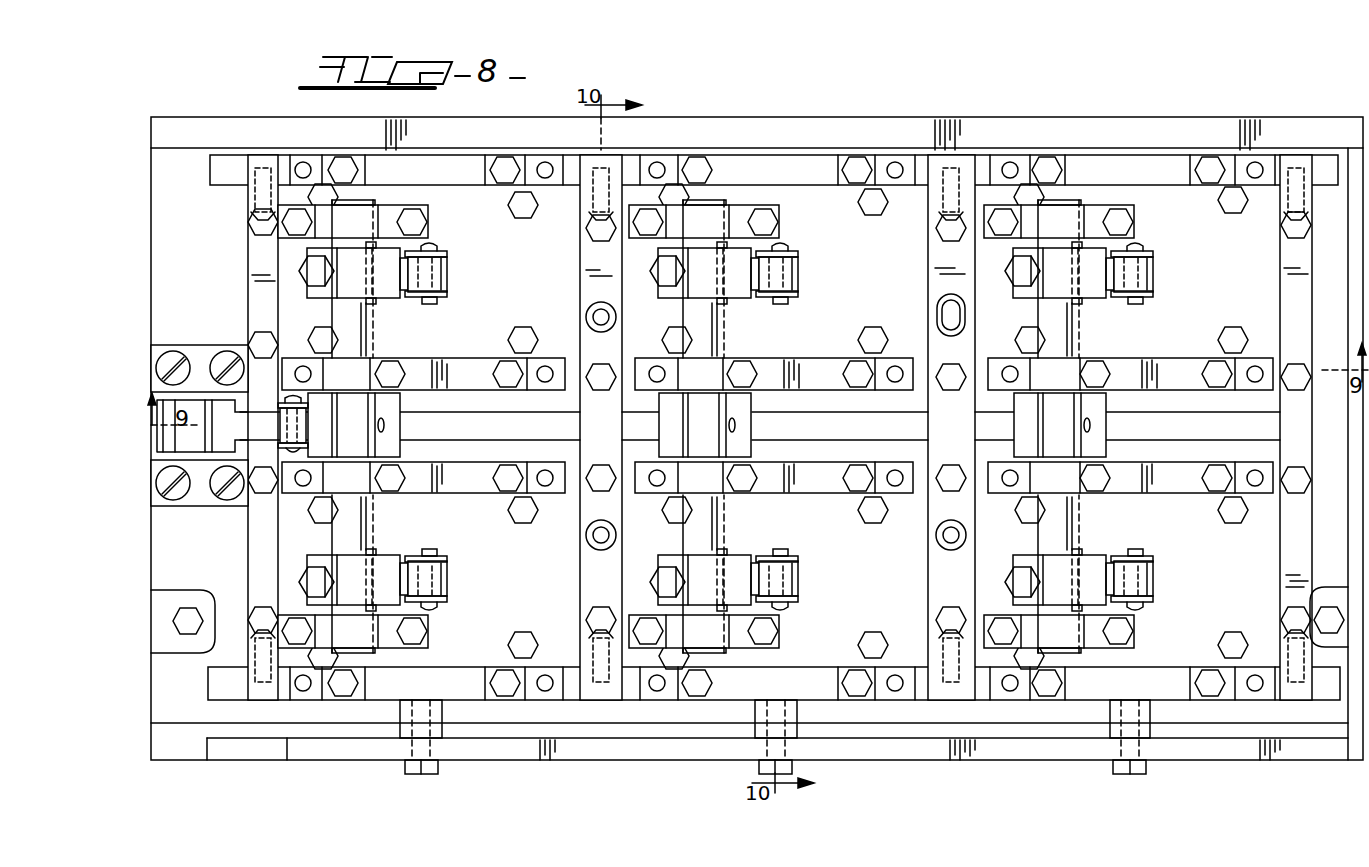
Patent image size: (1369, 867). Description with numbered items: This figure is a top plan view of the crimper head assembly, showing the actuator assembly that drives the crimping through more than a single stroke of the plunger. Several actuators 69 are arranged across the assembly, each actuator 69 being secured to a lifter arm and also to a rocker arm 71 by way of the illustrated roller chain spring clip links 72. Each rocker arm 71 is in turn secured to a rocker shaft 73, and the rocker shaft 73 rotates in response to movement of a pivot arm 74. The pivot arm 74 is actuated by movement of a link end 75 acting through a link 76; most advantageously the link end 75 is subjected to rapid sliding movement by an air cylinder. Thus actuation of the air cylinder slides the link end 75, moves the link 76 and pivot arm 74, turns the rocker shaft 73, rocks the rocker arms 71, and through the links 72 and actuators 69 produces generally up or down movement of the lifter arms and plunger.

The actuator 69 is at (440, 292).
The rocker arm 71 is at (1061, 590).
The roller chain spring clip links 72 is at (432, 250).
The rocker shaft 73 is at (365, 331).
The pivot arm 74 is at (393, 406).
The link end 75 is at (192, 445).
The link 76 is at (295, 452).